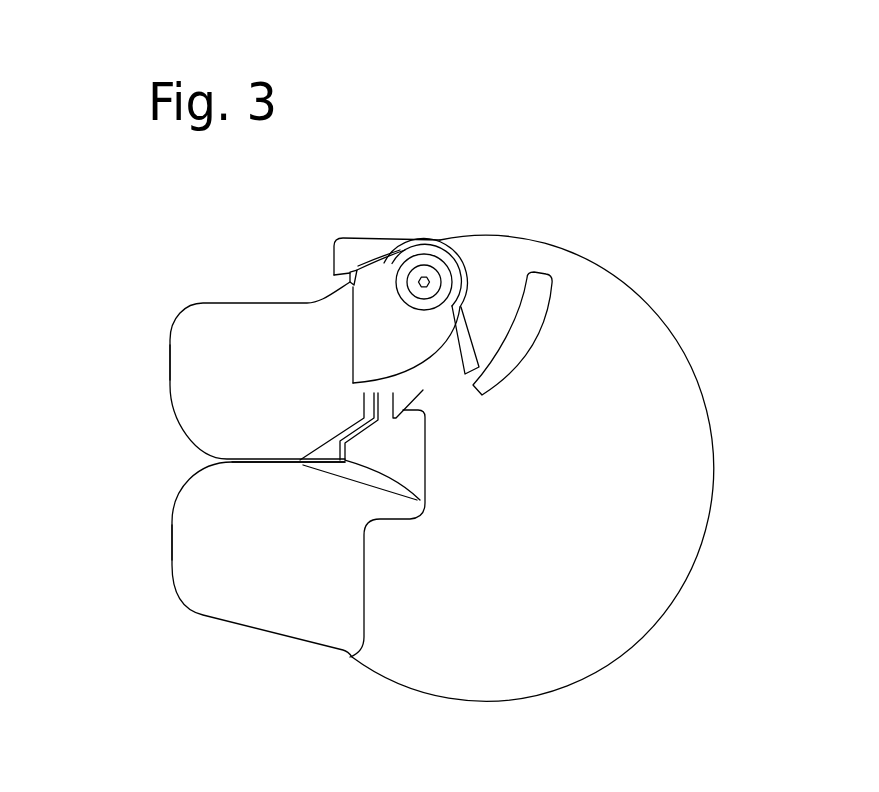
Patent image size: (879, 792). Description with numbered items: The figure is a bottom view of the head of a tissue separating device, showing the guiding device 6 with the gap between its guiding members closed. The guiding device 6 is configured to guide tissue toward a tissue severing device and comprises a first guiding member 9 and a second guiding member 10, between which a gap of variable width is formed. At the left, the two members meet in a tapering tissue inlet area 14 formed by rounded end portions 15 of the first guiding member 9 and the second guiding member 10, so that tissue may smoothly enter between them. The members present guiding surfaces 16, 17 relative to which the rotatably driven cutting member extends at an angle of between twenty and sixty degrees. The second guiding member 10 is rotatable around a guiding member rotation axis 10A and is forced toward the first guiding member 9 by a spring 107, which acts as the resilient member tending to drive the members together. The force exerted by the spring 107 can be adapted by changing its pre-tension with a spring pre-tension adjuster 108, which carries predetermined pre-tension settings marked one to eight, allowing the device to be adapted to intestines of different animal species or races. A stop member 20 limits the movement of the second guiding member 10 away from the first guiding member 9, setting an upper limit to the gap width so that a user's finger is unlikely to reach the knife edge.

The guiding device 6 is at (140, 284).
The first guiding member 9 is at (238, 575).
The second guiding member 10 is at (263, 343).
The guiding member rotation axis 10A is at (418, 275).
The tapering tissue inlet area 14 is at (186, 453).
The rounded end portions 15 is at (168, 363).
The guiding surface 16 is at (210, 530).
The guiding surface 17 is at (240, 342).
The stop member 20 is at (342, 240).
The spring 107 is at (418, 238).
The spring pre-tension adjuster 108 is at (543, 277).